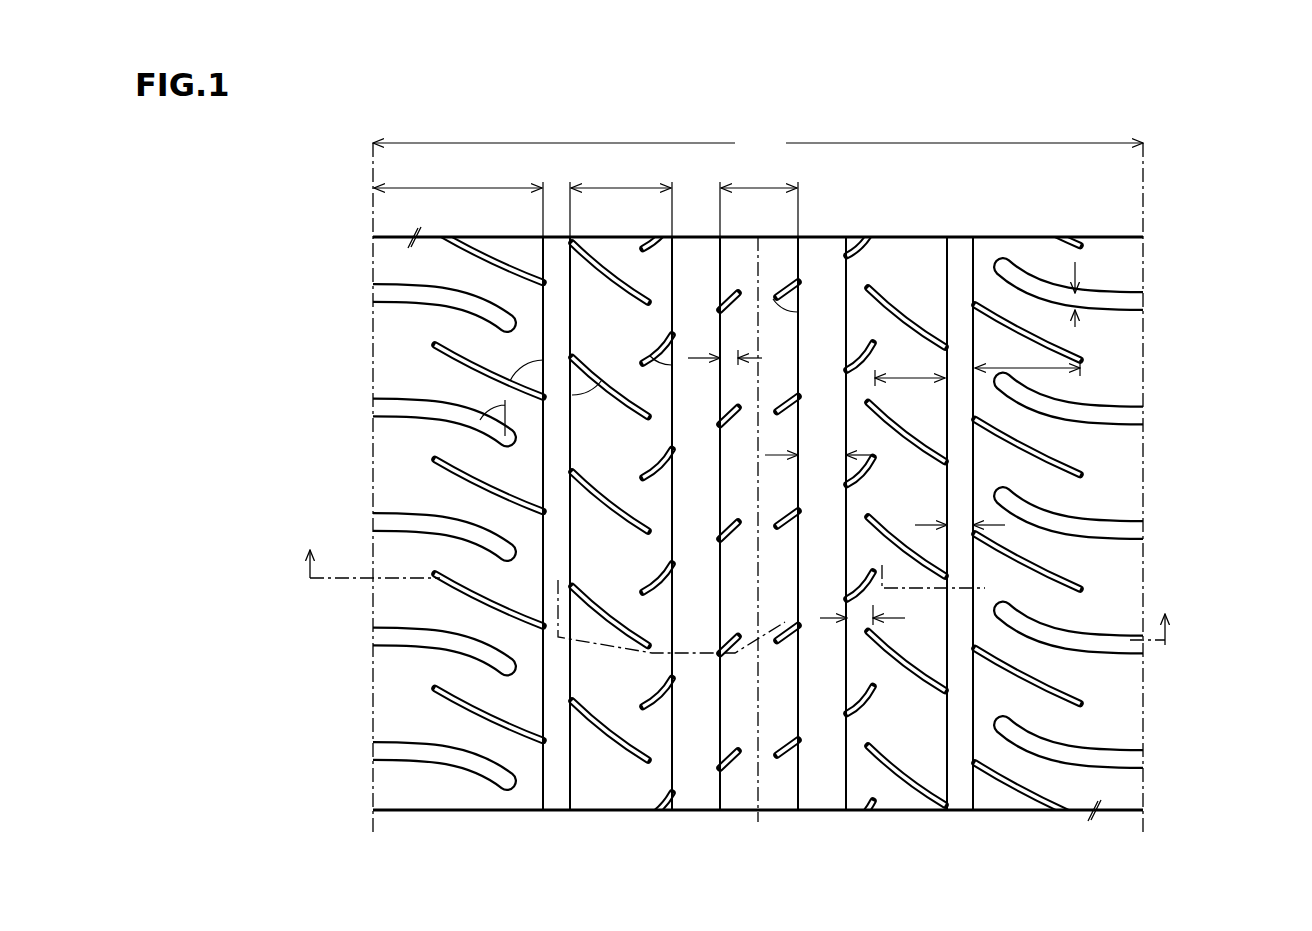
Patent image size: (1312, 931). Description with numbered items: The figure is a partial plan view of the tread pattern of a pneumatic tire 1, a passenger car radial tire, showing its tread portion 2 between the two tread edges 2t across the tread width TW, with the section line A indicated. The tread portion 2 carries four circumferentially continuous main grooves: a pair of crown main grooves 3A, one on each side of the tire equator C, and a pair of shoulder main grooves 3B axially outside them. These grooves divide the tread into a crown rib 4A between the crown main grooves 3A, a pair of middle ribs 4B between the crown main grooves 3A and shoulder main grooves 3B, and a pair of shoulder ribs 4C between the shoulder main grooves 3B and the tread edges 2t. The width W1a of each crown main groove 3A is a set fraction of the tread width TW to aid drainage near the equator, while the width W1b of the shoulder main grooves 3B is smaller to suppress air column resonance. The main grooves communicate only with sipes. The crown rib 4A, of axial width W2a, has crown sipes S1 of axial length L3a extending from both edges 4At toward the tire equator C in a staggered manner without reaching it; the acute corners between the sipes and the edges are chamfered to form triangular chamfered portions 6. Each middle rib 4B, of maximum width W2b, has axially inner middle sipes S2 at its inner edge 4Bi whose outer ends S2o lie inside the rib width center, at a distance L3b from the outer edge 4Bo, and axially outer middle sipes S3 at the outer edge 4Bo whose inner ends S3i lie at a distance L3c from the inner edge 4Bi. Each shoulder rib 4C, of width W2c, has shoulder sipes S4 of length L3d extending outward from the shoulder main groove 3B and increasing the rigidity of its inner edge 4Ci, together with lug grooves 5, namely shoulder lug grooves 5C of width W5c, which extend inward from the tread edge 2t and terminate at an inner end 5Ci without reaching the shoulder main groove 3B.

The pneumatic tire 1 is at (1164, 190).
The tread portion 2 is at (1048, 250).
The tread edge 2t is at (373, 270).
The crown main groove 3A is at (692, 265).
The shoulder main groove 3B is at (563, 268).
The crown rib 4A is at (745, 785).
The edge of crown rib 4At is at (718, 790).
The middle rib 4B is at (612, 782).
The axially inner edge of middle rib 4Bi is at (846, 785).
The axially outer edge of middle rib 4Bo is at (960, 785).
The shoulder rib 4C is at (460, 785).
The axially inner edge of shoulder rib 4Ci is at (556, 790).
The lug groove 5 is at (400, 405).
The shoulder lug groove 5C is at (726, 524).
The axially inner end of shoulder lug groove 5Ci is at (515, 440).
The chamfered portion 6 is at (722, 530).
The crown sipe S1 is at (730, 301).
The axially inner middle sipe S2 is at (656, 350).
The axially outer end of axially inner middle sipe S2o is at (898, 312).
The axially outer middle sipe S3 is at (590, 370).
The axially inner end of axially outer middle sipe S3i is at (870, 752).
The shoulder sipe S4 is at (470, 345).
The tire equator C is at (757, 541).
The tread width TW is at (758, 143).
The axial width of crown rib W2a is at (759, 198).
The maximum width of middle rib W2b is at (607, 198).
The axial width of shoulder rib W2c is at (458, 174).
The width of crown main groove W1a is at (834, 439).
The width of shoulder main groove W1b is at (946, 512).
The groove width of shoulder lug groove W5c is at (1104, 294).
The axial length of crown sipe L3a is at (726, 366).
The axial distance between outer end of inner middle sipe and outer edge of middle r L3b is at (910, 386).
The axial distance between inner end of outer middle sipe and inner edge of middle r L3c is at (867, 609).
The axial length of shoulder sipe L3d is at (1027, 376).
The section line A- A is at (738, 600).